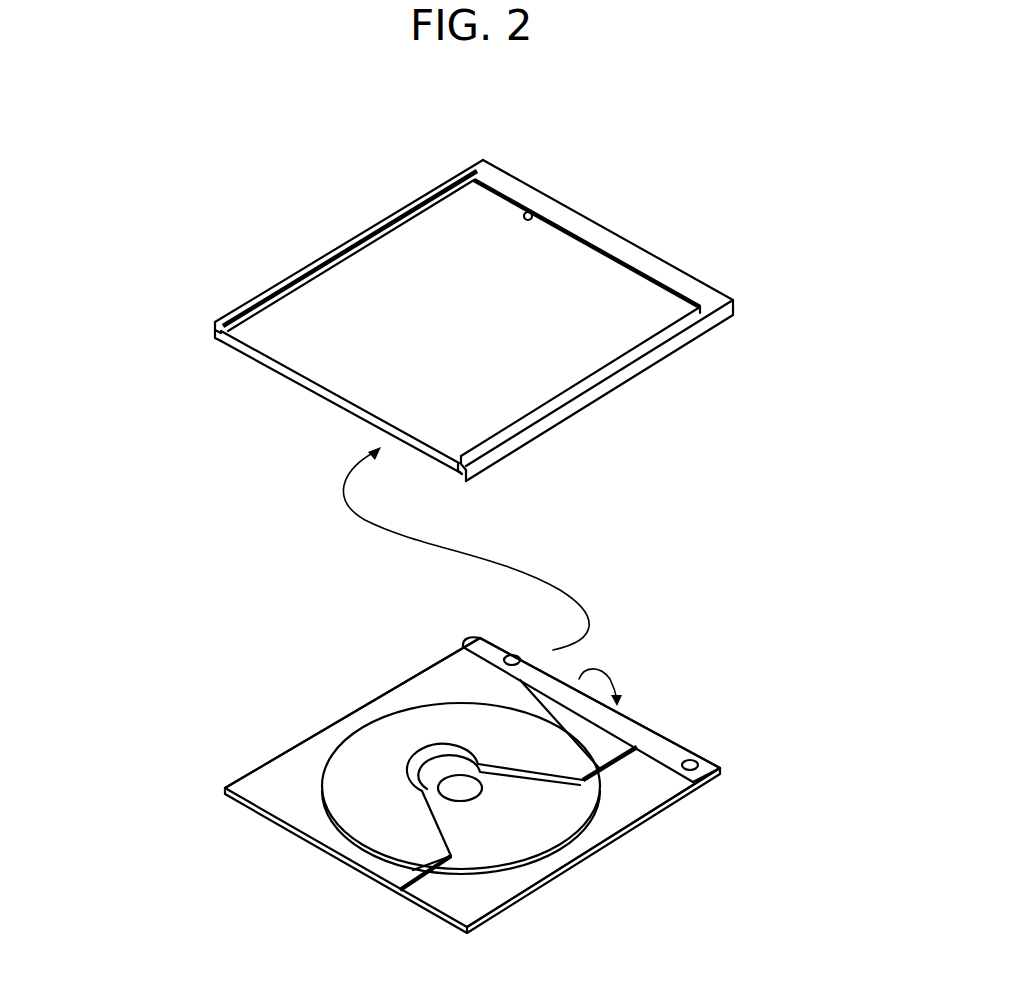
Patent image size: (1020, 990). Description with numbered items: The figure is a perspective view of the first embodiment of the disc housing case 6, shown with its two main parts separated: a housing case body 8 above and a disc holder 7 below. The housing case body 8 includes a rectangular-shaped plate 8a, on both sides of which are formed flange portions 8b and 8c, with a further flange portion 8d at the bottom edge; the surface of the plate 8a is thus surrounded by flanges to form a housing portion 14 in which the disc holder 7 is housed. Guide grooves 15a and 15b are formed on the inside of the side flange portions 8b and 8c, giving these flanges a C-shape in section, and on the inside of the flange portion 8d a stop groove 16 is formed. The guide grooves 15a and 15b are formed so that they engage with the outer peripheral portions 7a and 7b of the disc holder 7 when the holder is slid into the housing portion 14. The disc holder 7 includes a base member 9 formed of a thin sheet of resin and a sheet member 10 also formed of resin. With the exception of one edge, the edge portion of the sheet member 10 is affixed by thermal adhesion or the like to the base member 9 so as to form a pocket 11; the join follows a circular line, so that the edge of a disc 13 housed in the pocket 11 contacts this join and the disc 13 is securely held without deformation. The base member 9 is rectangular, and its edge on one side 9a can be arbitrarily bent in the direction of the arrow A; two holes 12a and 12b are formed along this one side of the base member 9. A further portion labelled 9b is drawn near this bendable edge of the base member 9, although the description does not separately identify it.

The disc housing case 6 is at (518, 135).
The housing case body 8 is at (594, 199).
The rectangular-shaped plate 8a is at (320, 378).
The flange portion 8b is at (367, 233).
The flange portion 8c is at (594, 383).
The flange portion 8d is at (652, 252).
The housing portion 14 is at (455, 238).
The guide groove 15a is at (461, 478).
The guide groove 15b is at (249, 305).
The stop groove 16 is at (529, 211).
The disc holder 7 is at (360, 705).
The outer peripheral portion 7a is at (633, 823).
The outer peripheral portion 7b is at (423, 668).
The base member 9 is at (464, 901).
The edge on one side 9a is at (620, 723).
The strip pressing portion 9b is at (552, 684).
The sheet member 10 is at (282, 767).
The pocket 11 is at (443, 815).
The hole 12a is at (693, 755).
The hole 12b is at (512, 646).
The disc 13 is at (580, 797).
The arrow A is at (606, 683).